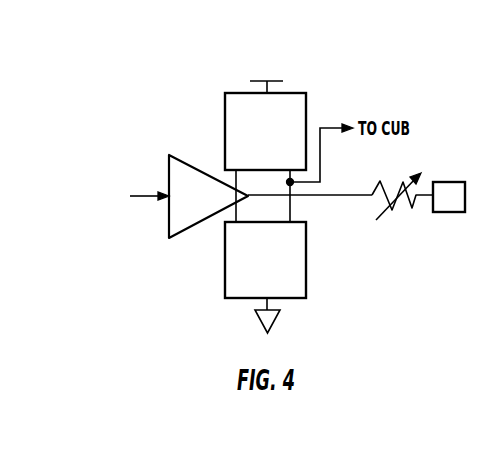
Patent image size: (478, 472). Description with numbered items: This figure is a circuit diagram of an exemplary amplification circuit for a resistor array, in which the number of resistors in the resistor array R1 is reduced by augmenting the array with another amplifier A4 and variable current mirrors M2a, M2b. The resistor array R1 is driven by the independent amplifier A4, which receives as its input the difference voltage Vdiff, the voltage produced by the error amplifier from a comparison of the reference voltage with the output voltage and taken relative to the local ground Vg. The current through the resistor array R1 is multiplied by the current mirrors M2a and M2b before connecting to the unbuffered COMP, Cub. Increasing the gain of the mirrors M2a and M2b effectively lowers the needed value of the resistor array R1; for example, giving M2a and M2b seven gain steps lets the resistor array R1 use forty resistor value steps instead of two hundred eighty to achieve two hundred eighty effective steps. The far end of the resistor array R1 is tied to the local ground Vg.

The amplifier A4 is at (208, 188).
The variable current mirror M2a is at (261, 119).
The variable current mirror M2b is at (261, 277).
The resistor array R1 is at (395, 183).
The difference voltage Vdiff is at (131, 193).
The local ground Vg is at (449, 197).